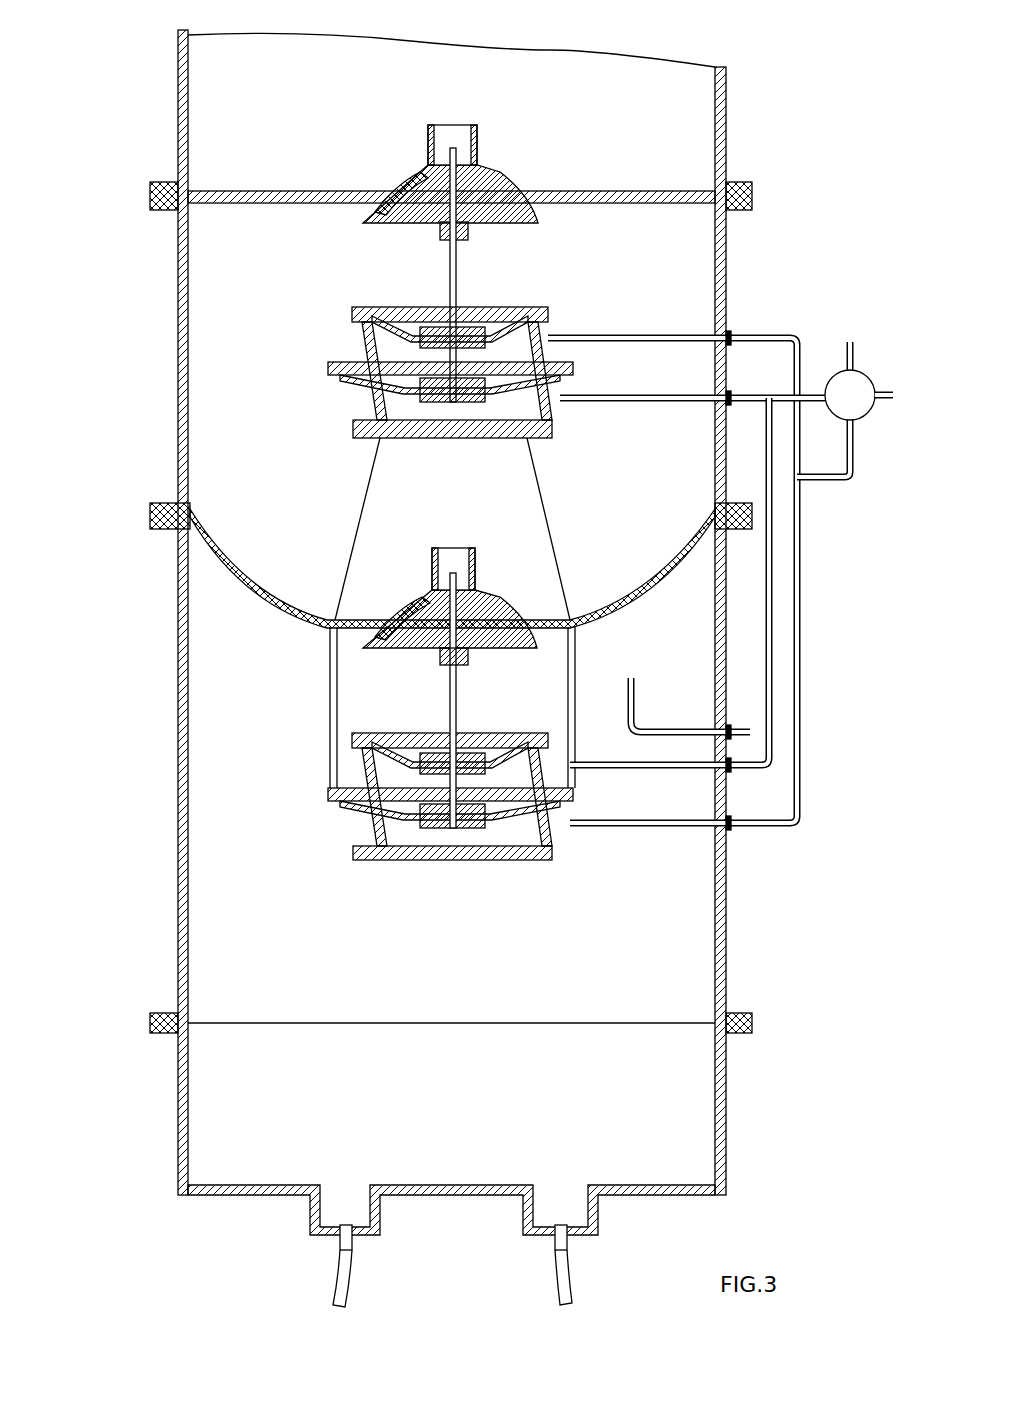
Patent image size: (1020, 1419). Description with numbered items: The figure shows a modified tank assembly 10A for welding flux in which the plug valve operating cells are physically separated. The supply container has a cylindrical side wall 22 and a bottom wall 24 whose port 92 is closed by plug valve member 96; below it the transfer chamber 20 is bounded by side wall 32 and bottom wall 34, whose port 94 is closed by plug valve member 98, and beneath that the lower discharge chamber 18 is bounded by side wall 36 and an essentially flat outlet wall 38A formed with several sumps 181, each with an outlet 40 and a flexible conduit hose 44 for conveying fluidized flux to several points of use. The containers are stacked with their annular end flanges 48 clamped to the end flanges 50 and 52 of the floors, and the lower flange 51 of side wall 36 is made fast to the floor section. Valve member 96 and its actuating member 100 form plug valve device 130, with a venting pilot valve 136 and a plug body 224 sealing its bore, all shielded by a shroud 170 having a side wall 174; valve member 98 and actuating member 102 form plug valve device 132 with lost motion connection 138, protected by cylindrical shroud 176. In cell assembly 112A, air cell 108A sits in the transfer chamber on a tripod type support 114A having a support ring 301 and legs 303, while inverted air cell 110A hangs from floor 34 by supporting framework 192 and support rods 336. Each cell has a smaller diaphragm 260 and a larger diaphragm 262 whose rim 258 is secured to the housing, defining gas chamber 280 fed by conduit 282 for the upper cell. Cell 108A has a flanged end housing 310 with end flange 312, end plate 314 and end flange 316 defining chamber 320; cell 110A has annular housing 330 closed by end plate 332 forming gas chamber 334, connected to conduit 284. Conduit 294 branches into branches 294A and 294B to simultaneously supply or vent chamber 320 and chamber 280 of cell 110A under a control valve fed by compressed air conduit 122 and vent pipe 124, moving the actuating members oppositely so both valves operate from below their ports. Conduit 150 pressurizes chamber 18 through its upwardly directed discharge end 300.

The tank assembly 10A is at (795, 280).
The lower discharge chamber 18 is at (215, 655).
The transfer chamber 20 is at (210, 333).
The cylindrical side wall 22 is at (727, 110).
The bottom wall 24 is at (645, 188).
The cylindrical side wall 32 is at (727, 310).
The bottom wall 34 is at (630, 620).
The cylindrical side wall 36 is at (727, 950).
The outlet wall 38A is at (727, 1130).
The outlet 40 is at (355, 1237).
The flexible conduit hose 44 is at (338, 1290).
The annular end flanges 48 is at (748, 183).
The end flange 50 is at (753, 195).
The lower flange 51 is at (753, 1020).
The end flange 52 is at (752, 512).
The port 92 is at (525, 185).
The port 94 is at (520, 618).
The plug valve member 96 is at (542, 160).
The plug valve member 98 is at (398, 667).
The actuating member 100 is at (458, 276).
The actuating member 102 is at (450, 692).
The air cell 108A is at (439, 578).
The air cell 110A is at (343, 772).
The cell assembly 112A is at (228, 465).
The tripod type support 114A is at (425, 529).
The conduit 122 is at (878, 400).
The vent pipe 124 is at (858, 355).
The plug valve device 130 is at (385, 165).
The plug valve device 132 is at (350, 650).
The pilot valve 136 is at (420, 228).
The lost motion connection 138 is at (480, 662).
The conduit 150 is at (742, 728).
The shroud 170 is at (420, 173).
The side wall 174 is at (478, 145).
The cylindrical shroud 176 is at (477, 580).
The sumps 181 is at (325, 1213).
The supporting framework 192 is at (320, 718).
The plug body 224 is at (447, 232).
The rim 258 is at (580, 364).
The diaphragm 260 is at (545, 305).
The diaphragm 262 is at (348, 378).
The gas chamber 280 is at (515, 340).
The conduit 282 is at (655, 335).
The conduit 284 is at (655, 828).
The conduit 294 is at (699, 598).
The branch 294A is at (672, 402).
The branch 294B is at (638, 770).
The discharge end 300 is at (640, 700).
The support ring 301 is at (410, 449).
The support legs 303 is at (560, 540).
The flanged end housing 310 is at (370, 393).
The end flange 312 is at (575, 388).
The end plate 314 is at (500, 435).
The end flange 316 is at (560, 420).
The chamber 320 is at (360, 425).
The annular housing 330 is at (350, 815).
The end plate 332 is at (428, 881).
The gas chamber 334 is at (380, 847).
The support rods 336 is at (328, 692).